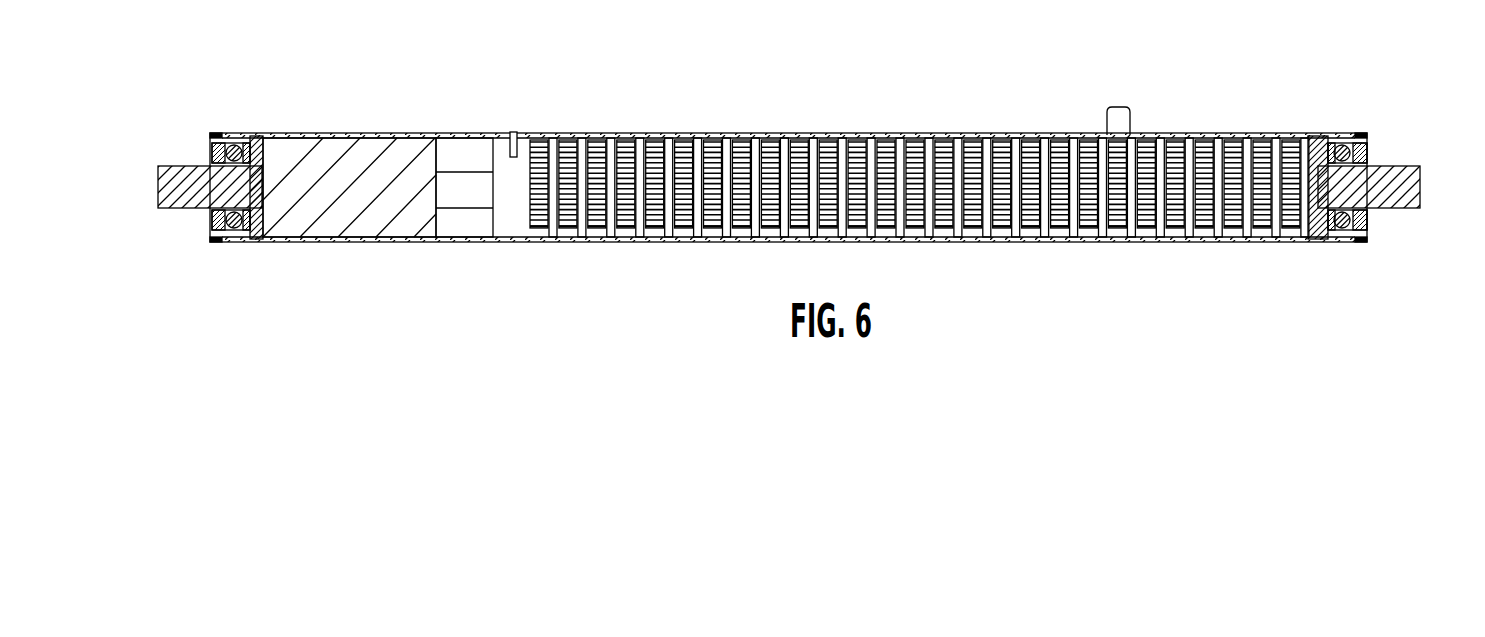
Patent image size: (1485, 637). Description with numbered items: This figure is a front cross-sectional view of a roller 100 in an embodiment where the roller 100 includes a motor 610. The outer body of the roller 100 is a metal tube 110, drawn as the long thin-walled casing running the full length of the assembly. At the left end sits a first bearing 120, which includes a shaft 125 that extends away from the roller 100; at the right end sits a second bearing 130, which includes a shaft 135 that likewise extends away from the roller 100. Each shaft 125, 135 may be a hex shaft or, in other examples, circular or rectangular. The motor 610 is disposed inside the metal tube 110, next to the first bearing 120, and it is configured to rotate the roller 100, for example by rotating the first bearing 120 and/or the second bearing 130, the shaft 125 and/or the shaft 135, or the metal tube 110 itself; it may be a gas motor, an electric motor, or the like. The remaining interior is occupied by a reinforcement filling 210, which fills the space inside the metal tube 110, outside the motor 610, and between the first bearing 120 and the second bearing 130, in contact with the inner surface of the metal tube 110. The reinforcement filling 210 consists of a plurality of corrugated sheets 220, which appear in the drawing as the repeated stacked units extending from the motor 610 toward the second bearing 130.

The roller 100 is at (153, 60).
The metal tube 110 is at (660, 135).
The first bearing 120 is at (233, 146).
The shaft 125 is at (163, 194).
The second bearing 130 is at (1360, 135).
The shaft 135 is at (1403, 185).
The reinforcement filling 210 is at (945, 150).
The corrugated sheets 220 is at (1118, 107).
The motor 610 is at (388, 152).